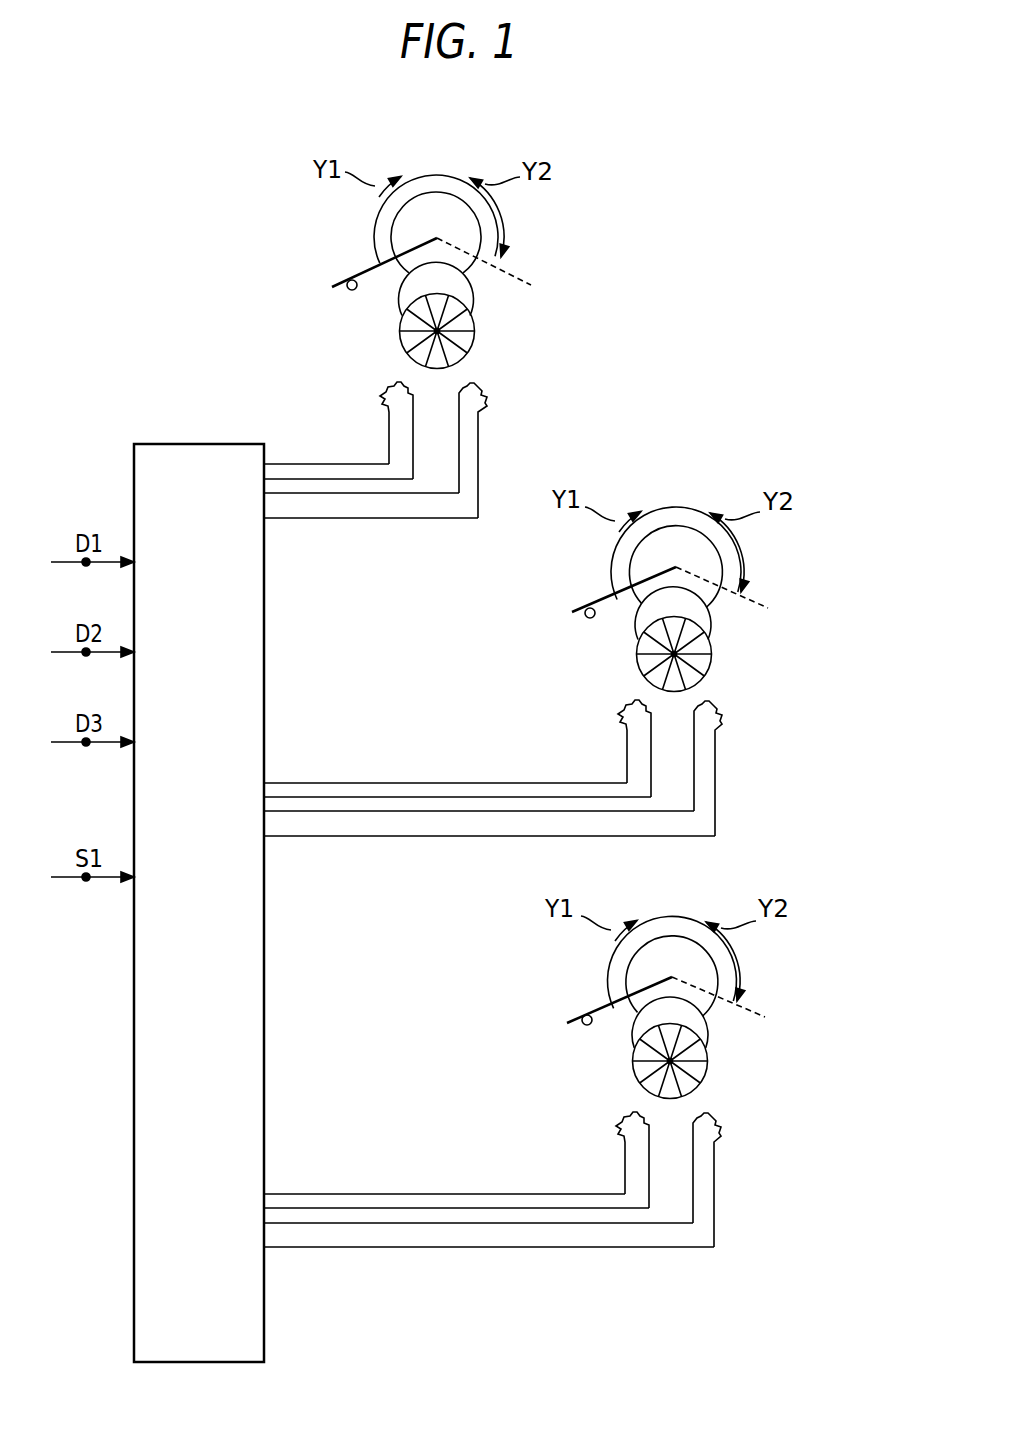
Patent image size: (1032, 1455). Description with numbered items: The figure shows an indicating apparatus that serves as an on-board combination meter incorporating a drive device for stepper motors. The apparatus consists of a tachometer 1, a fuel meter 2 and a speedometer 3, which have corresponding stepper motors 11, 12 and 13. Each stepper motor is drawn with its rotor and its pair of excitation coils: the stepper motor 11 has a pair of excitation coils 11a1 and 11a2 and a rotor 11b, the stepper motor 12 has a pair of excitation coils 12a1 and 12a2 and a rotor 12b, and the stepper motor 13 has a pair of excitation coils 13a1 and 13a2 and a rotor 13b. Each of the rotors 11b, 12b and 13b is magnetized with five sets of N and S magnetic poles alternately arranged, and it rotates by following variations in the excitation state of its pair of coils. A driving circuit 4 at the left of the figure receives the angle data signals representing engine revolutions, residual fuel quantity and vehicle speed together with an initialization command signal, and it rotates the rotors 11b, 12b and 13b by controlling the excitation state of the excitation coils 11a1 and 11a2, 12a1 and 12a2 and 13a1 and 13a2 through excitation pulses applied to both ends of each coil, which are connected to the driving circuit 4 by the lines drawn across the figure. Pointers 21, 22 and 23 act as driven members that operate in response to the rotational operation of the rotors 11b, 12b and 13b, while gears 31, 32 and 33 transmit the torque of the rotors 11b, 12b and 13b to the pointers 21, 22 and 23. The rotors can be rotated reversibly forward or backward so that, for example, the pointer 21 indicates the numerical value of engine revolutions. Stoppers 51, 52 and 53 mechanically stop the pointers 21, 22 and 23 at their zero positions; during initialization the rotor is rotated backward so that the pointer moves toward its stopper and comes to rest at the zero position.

The tachometer 1 is at (535, 211).
The fuel meter 2 is at (775, 541).
The speedometer 3 is at (770, 949).
The driving circuit 4 is at (200, 444).
The stepper motor 11 is at (505, 432).
The excitation coil 11a1 is at (497, 388).
The excitation coil 11a2 is at (406, 400).
The rotor 11b is at (474, 329).
The stepper motor 12 is at (742, 751).
The excitation coil 12a1 is at (735, 705).
The excitation coil 12a2 is at (645, 718).
The rotor 12b is at (712, 653).
The stepper motor 13 is at (739, 1162).
The excitation coil 13a1 is at (732, 1113).
The excitation coil 13a2 is at (643, 1130).
The rotor 13b is at (708, 1060).
The pointer 21 is at (357, 276).
The pointer 22 is at (596, 605).
The pointer 23 is at (597, 1010).
The gear 31 is at (473, 302).
The gear 32 is at (711, 628).
The gear 33 is at (708, 1038).
The stopper 51 is at (348, 291).
The stopper 52 is at (586, 619).
The stopper 53 is at (584, 1026).